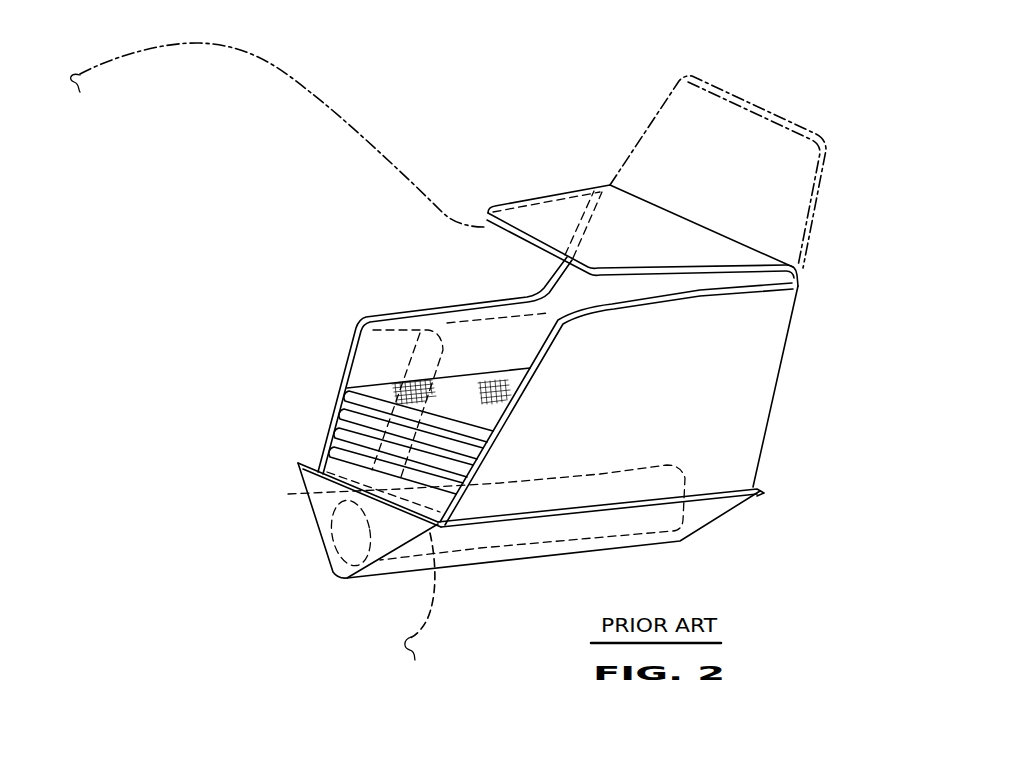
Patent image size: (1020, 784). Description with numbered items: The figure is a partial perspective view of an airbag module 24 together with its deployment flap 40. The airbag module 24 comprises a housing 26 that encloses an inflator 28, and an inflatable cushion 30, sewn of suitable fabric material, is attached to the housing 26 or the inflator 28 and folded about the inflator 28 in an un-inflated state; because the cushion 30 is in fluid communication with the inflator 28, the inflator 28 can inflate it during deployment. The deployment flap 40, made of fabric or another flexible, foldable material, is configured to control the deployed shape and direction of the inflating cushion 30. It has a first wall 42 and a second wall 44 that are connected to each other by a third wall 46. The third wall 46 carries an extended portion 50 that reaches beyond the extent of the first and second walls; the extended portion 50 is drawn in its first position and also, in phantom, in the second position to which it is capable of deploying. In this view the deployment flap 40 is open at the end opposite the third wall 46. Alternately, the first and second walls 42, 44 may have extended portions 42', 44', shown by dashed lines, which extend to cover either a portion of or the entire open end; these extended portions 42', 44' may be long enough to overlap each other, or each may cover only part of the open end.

The airbag module 24 is at (316, 541).
The housing 26 is at (623, 543).
The inflator 28 is at (473, 517).
The inflatable cushion 30 is at (350, 128).
The deployment flap 40 is at (757, 241).
The first wall 42 is at (416, 365).
The extended portion of the first wall 42' is at (382, 374).
The second wall 44 is at (631, 430).
The extended portion of the second wall 44' is at (475, 289).
The third wall 46 is at (727, 284).
The extended portion 50 is at (532, 210).